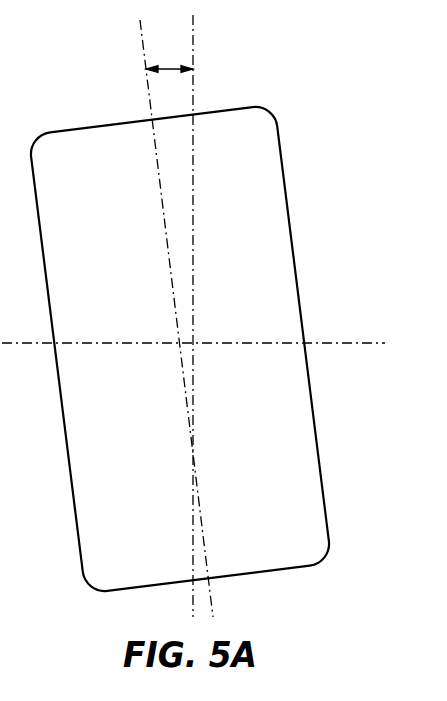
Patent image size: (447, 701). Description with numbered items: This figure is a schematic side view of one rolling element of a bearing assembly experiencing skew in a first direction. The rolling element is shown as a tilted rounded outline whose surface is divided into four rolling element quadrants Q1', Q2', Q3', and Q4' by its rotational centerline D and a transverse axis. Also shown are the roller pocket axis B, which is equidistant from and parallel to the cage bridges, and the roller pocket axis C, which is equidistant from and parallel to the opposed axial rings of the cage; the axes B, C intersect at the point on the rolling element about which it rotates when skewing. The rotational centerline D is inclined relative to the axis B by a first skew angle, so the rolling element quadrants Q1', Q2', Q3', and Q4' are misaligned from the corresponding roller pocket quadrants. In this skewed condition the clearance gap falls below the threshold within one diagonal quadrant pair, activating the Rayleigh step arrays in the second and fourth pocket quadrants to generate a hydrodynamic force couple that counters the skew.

The axis B is at (195, 85).
The rotational centerline D is at (147, 87).
The axis C is at (365, 342).
The first rolling element quadrant Q1' is at (240, 245).
The second rolling element quadrant Q2' is at (120, 245).
The third rolling element quadrant Q3' is at (120, 443).
The fourth rolling element quadrant Q4' is at (248, 443).